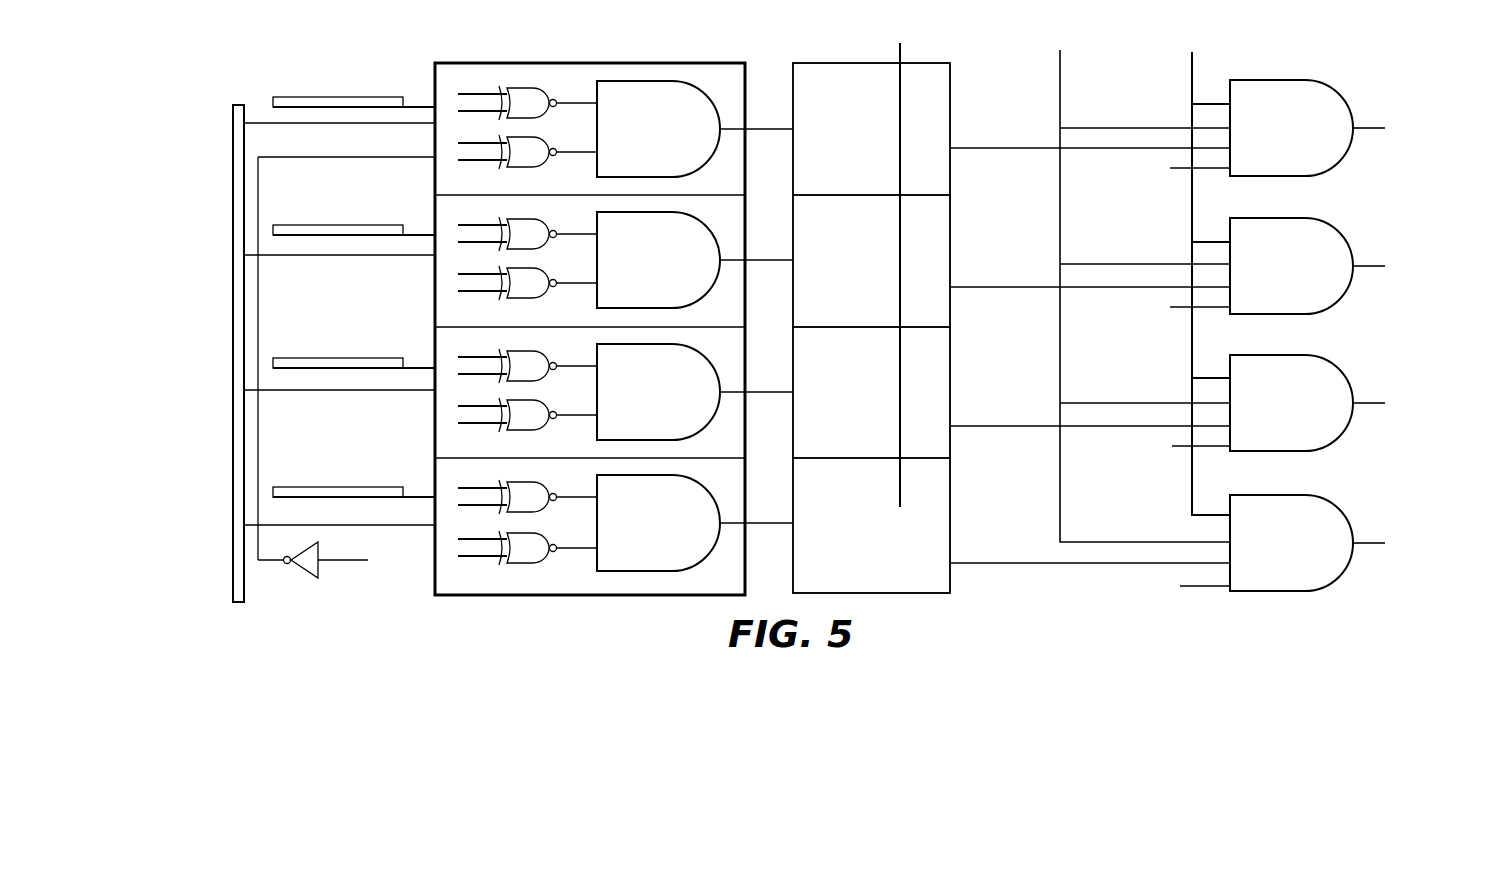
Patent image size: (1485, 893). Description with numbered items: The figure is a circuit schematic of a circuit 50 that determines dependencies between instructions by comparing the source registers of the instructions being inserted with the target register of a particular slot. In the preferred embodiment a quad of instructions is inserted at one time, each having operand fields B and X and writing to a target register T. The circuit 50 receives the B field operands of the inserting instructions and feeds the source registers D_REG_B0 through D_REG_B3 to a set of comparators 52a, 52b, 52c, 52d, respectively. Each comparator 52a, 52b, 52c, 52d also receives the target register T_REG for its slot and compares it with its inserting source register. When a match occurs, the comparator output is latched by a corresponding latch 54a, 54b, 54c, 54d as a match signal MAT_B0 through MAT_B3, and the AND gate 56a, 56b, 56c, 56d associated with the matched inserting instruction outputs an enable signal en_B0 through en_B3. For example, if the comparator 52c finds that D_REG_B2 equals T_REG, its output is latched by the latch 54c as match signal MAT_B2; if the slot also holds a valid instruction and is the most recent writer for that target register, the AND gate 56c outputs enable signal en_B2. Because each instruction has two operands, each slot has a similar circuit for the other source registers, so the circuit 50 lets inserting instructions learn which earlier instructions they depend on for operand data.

The circuit 50 is at (381, 12).
The comparator 52a is at (447, 63).
The comparator 52b is at (433, 317).
The comparator 52c is at (433, 450).
The comparator 52d is at (455, 597).
The latch 54a is at (855, 109).
The latch 54b is at (855, 234).
The latch 54c is at (855, 369).
The latch 54d is at (855, 504).
The AND gate 56a is at (1340, 98).
The AND gate 56b is at (1340, 235).
The AND gate 56c is at (1340, 372).
The AND gate 56d is at (1340, 512).